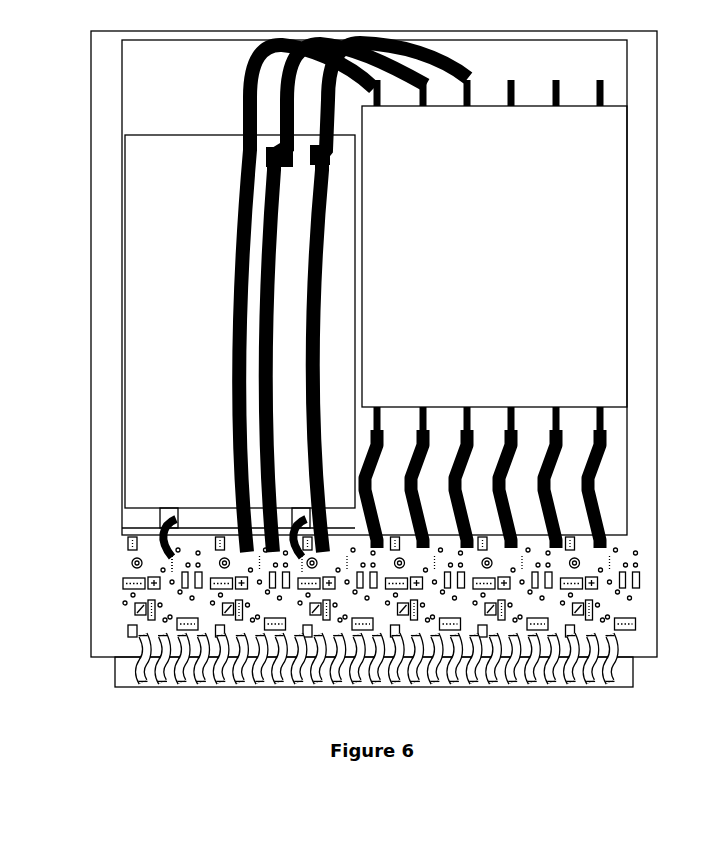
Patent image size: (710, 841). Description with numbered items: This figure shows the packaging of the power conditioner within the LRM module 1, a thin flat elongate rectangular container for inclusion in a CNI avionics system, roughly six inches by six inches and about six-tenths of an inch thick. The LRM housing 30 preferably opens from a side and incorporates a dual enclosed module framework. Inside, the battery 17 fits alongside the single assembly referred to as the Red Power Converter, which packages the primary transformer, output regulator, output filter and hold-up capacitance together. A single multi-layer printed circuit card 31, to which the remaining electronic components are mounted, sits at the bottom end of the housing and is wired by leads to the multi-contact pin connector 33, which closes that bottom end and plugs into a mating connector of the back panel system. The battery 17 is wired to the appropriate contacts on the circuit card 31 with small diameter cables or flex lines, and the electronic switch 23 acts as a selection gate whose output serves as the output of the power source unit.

The LRM module 1 is at (660, 125).
The battery 17 is at (200, 137).
The electronic switch 23 is at (487, 104).
The LRM housing 30 is at (92, 273).
The printed circuit card 31 is at (108, 555).
The pin connector 33 is at (127, 675).